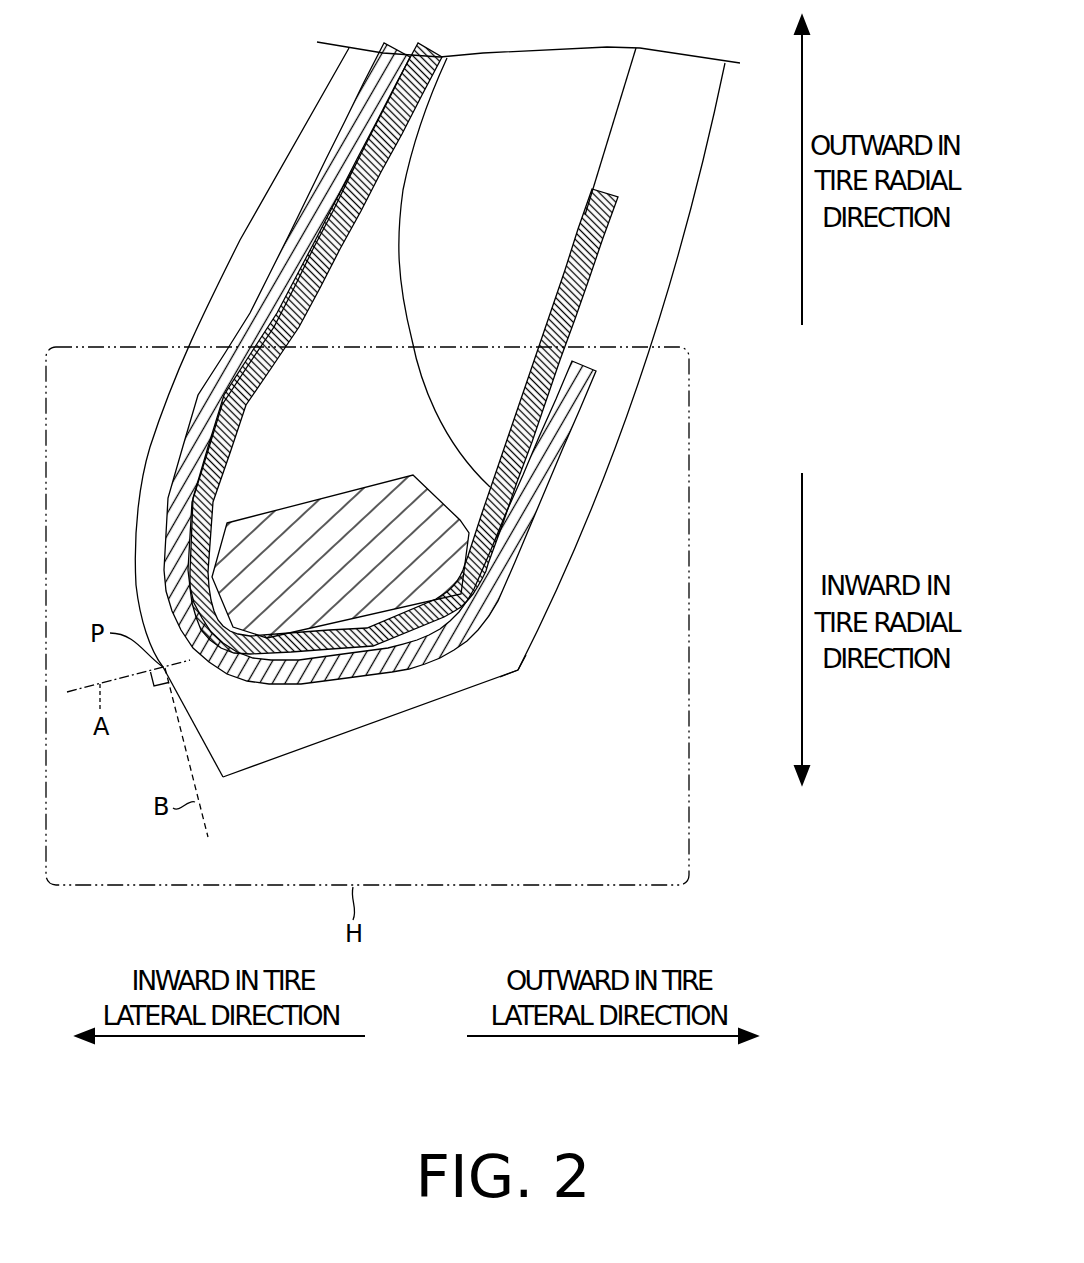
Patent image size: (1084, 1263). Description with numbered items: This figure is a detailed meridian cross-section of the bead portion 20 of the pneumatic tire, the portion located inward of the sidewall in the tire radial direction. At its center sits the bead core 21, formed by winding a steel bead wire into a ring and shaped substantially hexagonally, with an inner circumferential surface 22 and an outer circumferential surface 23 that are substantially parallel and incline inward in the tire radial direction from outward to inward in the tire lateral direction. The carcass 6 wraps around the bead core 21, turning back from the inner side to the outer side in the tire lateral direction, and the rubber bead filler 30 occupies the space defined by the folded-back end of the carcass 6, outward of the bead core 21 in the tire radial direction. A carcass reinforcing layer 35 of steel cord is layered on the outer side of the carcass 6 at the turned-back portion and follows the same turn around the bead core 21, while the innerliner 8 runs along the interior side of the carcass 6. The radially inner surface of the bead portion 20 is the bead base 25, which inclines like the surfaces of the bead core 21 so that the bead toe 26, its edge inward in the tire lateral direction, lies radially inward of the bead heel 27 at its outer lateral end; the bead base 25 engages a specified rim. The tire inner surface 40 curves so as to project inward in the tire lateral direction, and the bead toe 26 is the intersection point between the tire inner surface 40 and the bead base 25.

The carcass 6 is at (593, 277).
The innerliner 8 is at (320, 130).
The bead portion 20 is at (158, 286).
The bead core 21 is at (426, 534).
The inner circumferential surface 22 is at (373, 615).
The outer circumferential surface 23 is at (327, 497).
The bead base 25 is at (330, 742).
The bead toe 26 is at (223, 780).
The bead heel 27 is at (518, 672).
The bead filler 30 is at (555, 153).
The carcass reinforcing layer 35 is at (550, 490).
The tire inner surface 40 is at (140, 475).